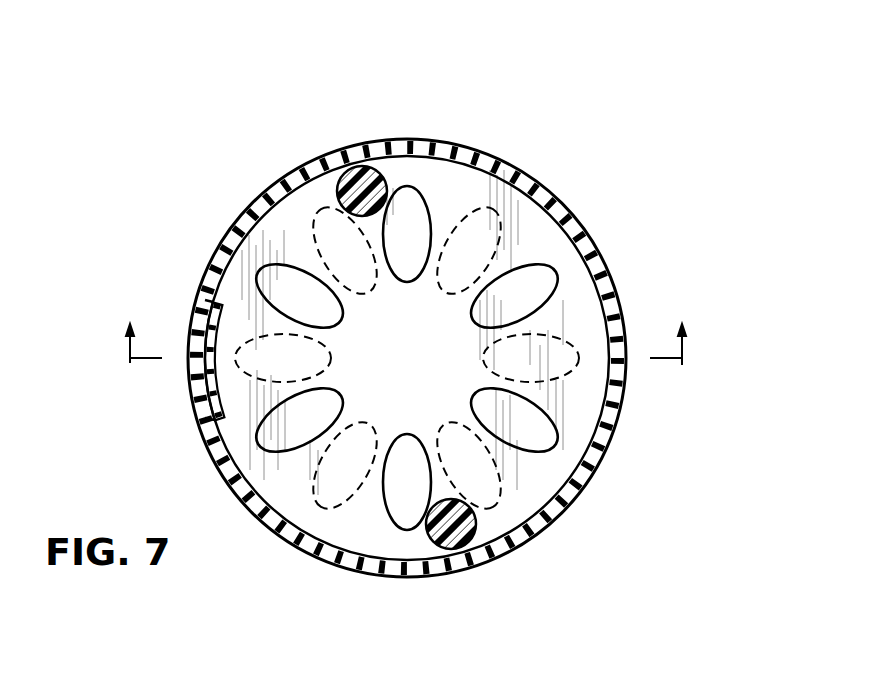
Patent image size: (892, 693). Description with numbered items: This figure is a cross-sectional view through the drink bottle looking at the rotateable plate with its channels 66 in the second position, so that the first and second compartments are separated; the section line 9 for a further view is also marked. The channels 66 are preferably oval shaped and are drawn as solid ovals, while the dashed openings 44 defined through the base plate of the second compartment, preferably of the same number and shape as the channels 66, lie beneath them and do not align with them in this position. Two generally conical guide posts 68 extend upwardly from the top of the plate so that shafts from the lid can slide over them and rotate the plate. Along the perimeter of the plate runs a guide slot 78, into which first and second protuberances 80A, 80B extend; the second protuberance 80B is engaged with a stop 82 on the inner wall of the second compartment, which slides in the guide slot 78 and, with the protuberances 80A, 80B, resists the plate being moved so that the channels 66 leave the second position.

The section line 9- 9 is at (404, 330).
The opening 44 is at (572, 366).
The channel 66 is at (547, 413).
The guide post 68 is at (367, 175).
The guide slot 78 is at (198, 372).
The first protuberance 80A is at (198, 412).
The second protuberance 80B is at (193, 313).
The stop 82 is at (212, 290).